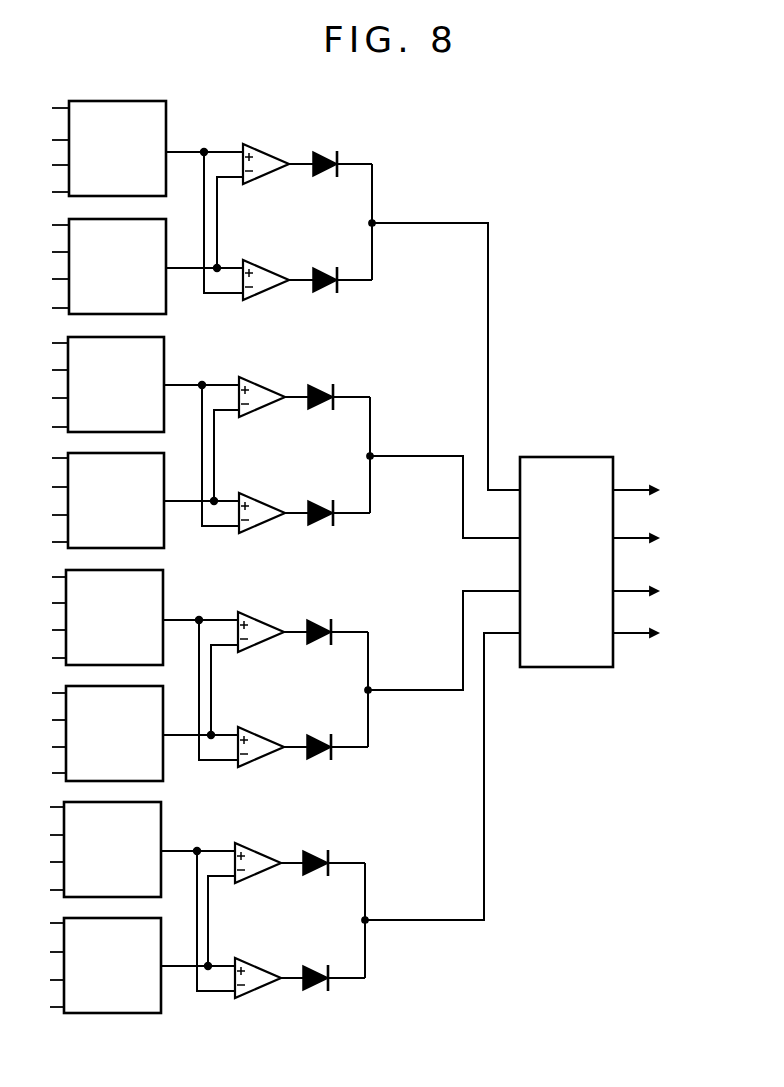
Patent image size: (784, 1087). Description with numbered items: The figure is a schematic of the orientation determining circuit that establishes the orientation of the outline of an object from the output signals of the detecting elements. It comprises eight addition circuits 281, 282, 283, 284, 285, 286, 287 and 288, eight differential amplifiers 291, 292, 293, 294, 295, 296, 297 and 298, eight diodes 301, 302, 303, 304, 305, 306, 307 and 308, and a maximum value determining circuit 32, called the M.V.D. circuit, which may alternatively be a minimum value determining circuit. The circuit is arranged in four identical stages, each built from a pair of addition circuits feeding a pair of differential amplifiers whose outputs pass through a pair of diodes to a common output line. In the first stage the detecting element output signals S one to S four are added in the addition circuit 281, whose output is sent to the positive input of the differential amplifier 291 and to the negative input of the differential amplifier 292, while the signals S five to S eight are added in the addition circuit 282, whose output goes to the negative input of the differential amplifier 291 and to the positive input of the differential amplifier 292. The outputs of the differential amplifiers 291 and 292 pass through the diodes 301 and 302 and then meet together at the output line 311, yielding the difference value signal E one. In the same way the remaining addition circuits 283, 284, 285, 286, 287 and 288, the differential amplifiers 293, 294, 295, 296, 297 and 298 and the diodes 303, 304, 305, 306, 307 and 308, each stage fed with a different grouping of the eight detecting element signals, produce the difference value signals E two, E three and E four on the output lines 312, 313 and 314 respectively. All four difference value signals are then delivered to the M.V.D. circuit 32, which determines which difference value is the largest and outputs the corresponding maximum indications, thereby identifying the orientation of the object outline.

The addition circuit 281 is at (166, 106).
The addition circuit 282 is at (166, 300).
The addition circuit 283 is at (164, 363).
The addition circuit 284 is at (164, 530).
The addition circuit 285 is at (163, 587).
The addition circuit 286 is at (163, 764).
The addition circuit 287 is at (161, 813).
The addition circuit 288 is at (161, 1004).
The differential amplifier 291 is at (259, 147).
The differential amplifier 292 is at (259, 263).
The differential amplifier 293 is at (262, 382).
The differential amplifier 294 is at (260, 494).
The differential amplifier 295 is at (262, 614).
The differential amplifier 296 is at (258, 730).
The differential amplifier 297 is at (257, 843).
The differential amplifier 298 is at (255, 958).
The diode 301 is at (322, 152).
The diode 302 is at (322, 268).
The diode 303 is at (321, 386).
The diode 304 is at (325, 496).
The diode 305 is at (322, 619).
The diode 306 is at (320, 734).
The diode 307 is at (318, 849).
The diode 308 is at (318, 965).
The output line 311 is at (455, 222).
The output line 312 is at (433, 455).
The output line 313 is at (444, 691).
The output line 314 is at (458, 922).
The maximum value determining circuit 32 is at (560, 457).